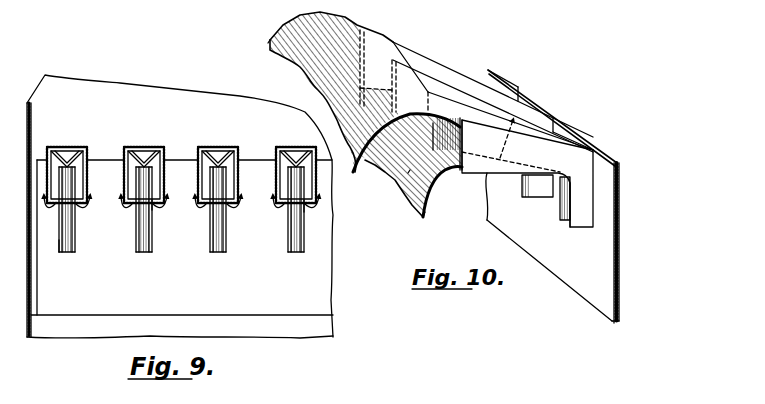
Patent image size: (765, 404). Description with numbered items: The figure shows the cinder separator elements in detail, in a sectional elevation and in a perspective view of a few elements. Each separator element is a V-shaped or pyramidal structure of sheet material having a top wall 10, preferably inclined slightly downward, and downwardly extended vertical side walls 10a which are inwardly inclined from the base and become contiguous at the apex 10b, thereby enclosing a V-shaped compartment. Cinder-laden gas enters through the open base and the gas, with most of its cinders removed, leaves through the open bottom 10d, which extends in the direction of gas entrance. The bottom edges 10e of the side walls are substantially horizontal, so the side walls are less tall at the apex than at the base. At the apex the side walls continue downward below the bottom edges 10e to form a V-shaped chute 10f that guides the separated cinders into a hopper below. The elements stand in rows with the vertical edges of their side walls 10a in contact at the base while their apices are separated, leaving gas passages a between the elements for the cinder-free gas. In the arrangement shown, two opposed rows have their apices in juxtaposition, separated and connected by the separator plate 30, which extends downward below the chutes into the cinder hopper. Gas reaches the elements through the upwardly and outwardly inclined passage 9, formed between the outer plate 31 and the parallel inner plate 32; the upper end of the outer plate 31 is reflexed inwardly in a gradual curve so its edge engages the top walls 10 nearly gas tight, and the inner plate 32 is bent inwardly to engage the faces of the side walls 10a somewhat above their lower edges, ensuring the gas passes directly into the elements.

In FIG. 10, the passage 9 is at (408, 173).
In FIG. 9, the top wall 10 is at (145, 147).
In FIG. 10, the top wall 10 is at (434, 78).
In FIG. 9, the side walls 10a is at (110, 135).
In FIG. 10, the side walls 10a is at (515, 147).
In FIG. 9, the apex 10b is at (221, 170).
In FIG. 10, the apex 10b is at (459, 175).
In FIG. 9, the open bottom 10d is at (151, 206).
In FIG. 9, the bottom edges 10e is at (305, 208).
In FIG. 10, the bottom edges 10e is at (443, 141).
In FIG. 9, the V-shaped chute 10f is at (77, 241).
In FIG. 10, the V-shaped chute 10f is at (582, 210).
In FIG. 9, the separator plate 30 is at (318, 278).
In FIG. 10, the separator plate 30 is at (588, 278).
In FIG. 10, the outer plate 31 is at (268, 43).
In FIG. 10, the inner plate 32 is at (426, 213).
In FIG. 9, the gas passages a is at (181, 188).
In FIG. 10, the gas passages a is at (560, 131).